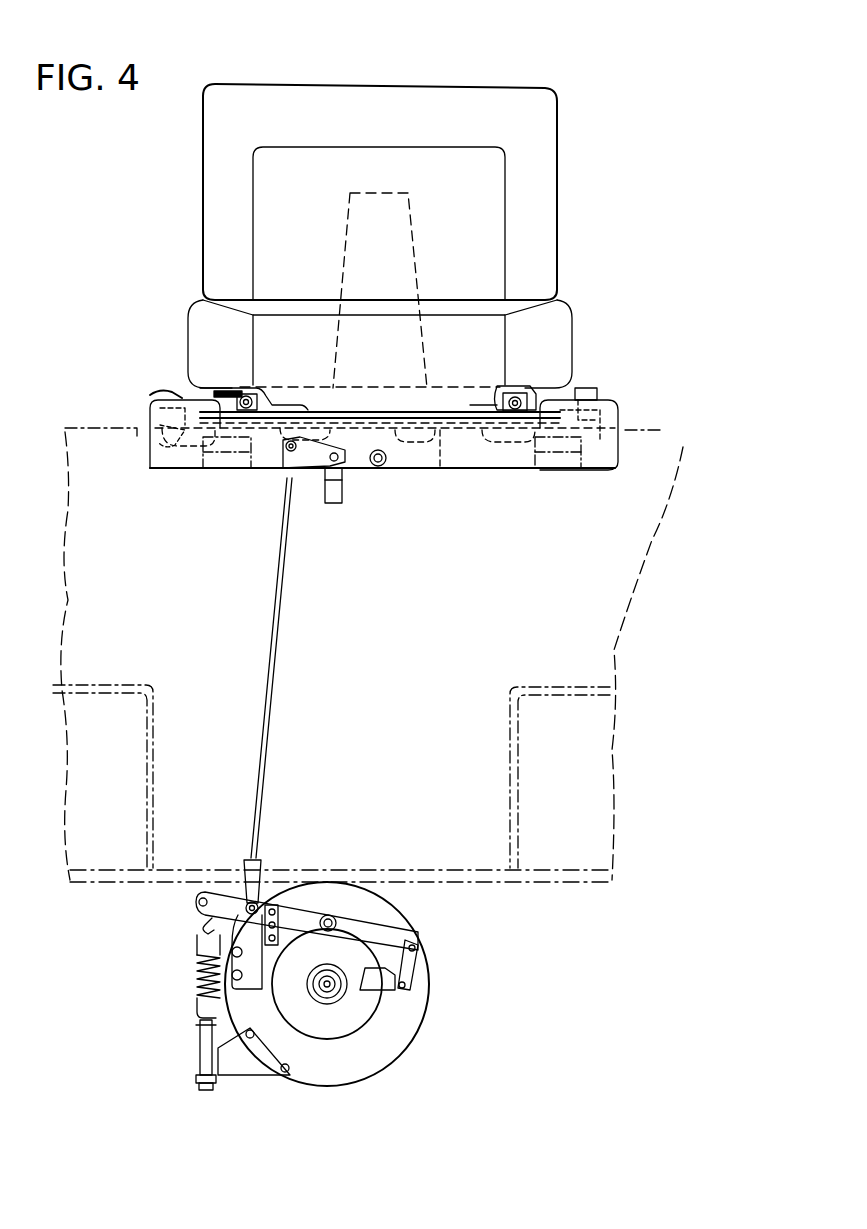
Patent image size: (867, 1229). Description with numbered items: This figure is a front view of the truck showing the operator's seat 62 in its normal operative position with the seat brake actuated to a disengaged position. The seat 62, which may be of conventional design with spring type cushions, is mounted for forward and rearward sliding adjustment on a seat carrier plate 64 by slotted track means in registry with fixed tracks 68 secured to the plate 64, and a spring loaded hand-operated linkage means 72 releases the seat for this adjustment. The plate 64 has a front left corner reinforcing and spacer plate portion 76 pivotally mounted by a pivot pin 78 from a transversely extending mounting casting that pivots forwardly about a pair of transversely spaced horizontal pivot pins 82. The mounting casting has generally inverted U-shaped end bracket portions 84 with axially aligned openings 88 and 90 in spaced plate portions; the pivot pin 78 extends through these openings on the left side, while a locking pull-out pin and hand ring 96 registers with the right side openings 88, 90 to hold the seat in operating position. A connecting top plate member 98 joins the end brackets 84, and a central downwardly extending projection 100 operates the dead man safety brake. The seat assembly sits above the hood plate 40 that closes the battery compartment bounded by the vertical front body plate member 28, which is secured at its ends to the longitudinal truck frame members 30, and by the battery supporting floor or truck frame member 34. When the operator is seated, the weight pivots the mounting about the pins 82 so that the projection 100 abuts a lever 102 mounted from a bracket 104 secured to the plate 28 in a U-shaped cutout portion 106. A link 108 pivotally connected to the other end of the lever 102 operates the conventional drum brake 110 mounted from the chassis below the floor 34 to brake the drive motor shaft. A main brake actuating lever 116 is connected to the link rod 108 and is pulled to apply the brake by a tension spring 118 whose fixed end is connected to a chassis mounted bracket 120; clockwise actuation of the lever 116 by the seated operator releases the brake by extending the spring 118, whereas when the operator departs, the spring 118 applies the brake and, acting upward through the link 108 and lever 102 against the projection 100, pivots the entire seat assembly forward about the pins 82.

The front body plate member 28 is at (372, 656).
The longitudinal truck frame members 30 is at (153, 750).
The truck frame member 34 is at (390, 865).
The hood plate 40 is at (96, 430).
The seat 62 is at (202, 315).
The seat carrier plate 64 is at (250, 410).
The fixed tracks 68 is at (240, 407).
The spring loaded hand-operated linkage means 72 is at (198, 392).
The front left corner reinforcing and spacer plate portion 76 is at (537, 405).
The pivot pin 78 is at (597, 388).
The horizontal pivot pins 82 is at (222, 455).
The end bracket portions 84 is at (622, 436).
The opening 88 is at (165, 400).
The opening 90 is at (168, 420).
The locking pull-out pin and hand ring 96 is at (142, 444).
The connecting top plate member 98 is at (455, 432).
The central downwardly extending projection 100 is at (393, 478).
The lever 102 is at (303, 472).
The bracket 104 is at (340, 503).
The U-shaped cutout portion 106 is at (273, 482).
The link 108 is at (282, 648).
The drum brake 110 is at (430, 1005).
The main brake actuating lever 116 is at (373, 930).
The tension spring 118 is at (197, 975).
The chassis mounted bracket 120 is at (200, 1052).